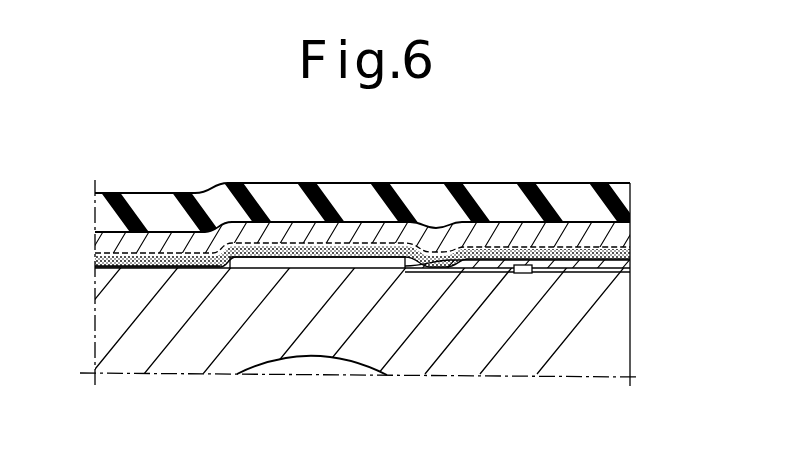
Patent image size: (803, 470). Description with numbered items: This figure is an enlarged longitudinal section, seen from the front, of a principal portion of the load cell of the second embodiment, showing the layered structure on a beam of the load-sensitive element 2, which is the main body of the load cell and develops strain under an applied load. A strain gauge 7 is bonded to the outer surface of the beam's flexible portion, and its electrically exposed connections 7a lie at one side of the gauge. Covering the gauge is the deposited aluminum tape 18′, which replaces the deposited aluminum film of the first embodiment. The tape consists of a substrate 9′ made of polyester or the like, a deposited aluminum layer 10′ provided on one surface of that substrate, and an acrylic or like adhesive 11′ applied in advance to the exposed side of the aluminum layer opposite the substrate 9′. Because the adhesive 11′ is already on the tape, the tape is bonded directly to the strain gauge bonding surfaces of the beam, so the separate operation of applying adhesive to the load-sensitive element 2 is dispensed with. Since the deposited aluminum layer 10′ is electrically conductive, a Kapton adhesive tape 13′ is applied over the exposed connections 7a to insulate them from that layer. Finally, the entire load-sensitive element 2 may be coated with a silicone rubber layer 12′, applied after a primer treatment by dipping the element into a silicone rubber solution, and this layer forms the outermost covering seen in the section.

The load-sensitive element 2 is at (608, 323).
The strain gauge 7 is at (327, 266).
The electrically exposed connections 7a is at (524, 273).
The substrate 9′ is at (97, 234).
The deposited aluminum layer 10′ is at (97, 254).
The adhesive 11′ is at (97, 264).
The silicone rubber layer 12′ is at (513, 200).
The Kapton adhesive tape 13′ is at (577, 269).
The multilayer insulating film 18′ is at (36, 290).